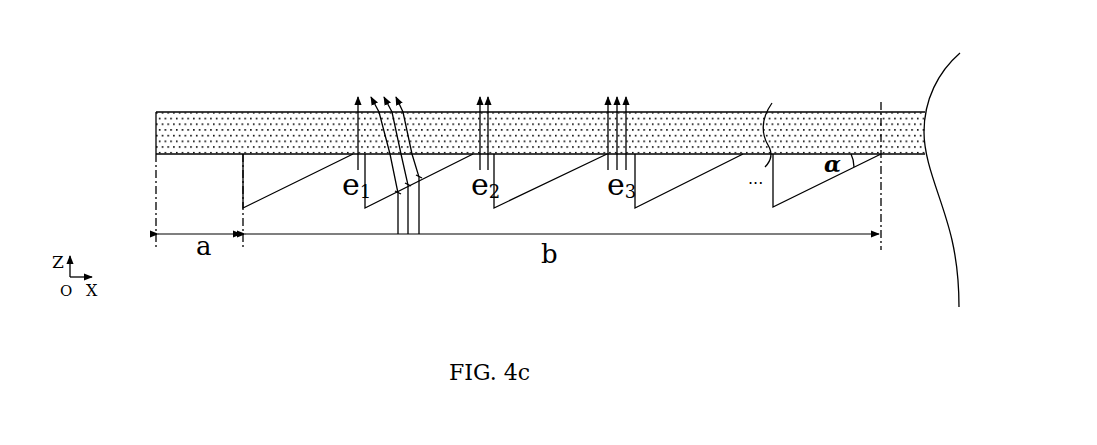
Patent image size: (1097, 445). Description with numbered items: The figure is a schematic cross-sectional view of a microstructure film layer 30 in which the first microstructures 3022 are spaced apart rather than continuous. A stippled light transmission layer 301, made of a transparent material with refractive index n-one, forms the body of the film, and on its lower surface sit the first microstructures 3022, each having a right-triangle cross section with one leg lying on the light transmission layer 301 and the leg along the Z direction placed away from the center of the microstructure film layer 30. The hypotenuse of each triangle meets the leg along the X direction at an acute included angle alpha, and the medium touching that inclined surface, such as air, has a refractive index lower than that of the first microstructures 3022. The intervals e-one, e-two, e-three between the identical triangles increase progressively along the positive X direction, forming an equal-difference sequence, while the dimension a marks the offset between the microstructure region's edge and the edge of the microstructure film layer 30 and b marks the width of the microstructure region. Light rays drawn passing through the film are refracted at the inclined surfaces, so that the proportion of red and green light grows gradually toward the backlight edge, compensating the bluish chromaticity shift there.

The microstructure film layer 30 is at (121, 72).
The light transmission layer 301 is at (285, 123).
The first microstructure 3022 is at (263, 183).